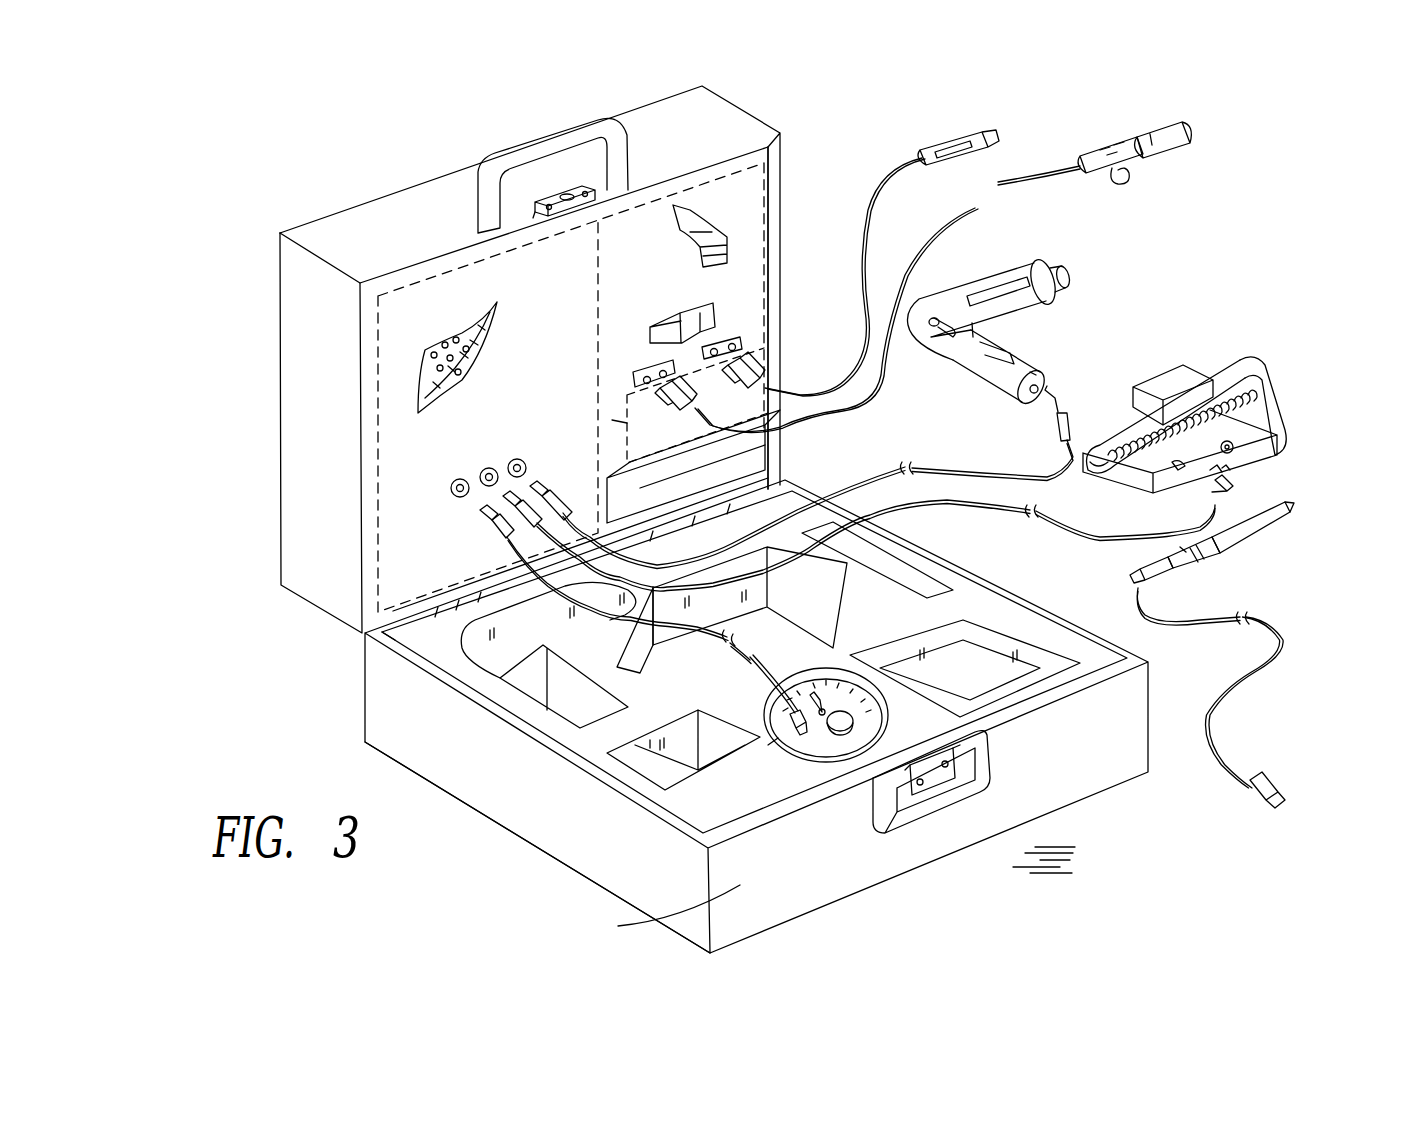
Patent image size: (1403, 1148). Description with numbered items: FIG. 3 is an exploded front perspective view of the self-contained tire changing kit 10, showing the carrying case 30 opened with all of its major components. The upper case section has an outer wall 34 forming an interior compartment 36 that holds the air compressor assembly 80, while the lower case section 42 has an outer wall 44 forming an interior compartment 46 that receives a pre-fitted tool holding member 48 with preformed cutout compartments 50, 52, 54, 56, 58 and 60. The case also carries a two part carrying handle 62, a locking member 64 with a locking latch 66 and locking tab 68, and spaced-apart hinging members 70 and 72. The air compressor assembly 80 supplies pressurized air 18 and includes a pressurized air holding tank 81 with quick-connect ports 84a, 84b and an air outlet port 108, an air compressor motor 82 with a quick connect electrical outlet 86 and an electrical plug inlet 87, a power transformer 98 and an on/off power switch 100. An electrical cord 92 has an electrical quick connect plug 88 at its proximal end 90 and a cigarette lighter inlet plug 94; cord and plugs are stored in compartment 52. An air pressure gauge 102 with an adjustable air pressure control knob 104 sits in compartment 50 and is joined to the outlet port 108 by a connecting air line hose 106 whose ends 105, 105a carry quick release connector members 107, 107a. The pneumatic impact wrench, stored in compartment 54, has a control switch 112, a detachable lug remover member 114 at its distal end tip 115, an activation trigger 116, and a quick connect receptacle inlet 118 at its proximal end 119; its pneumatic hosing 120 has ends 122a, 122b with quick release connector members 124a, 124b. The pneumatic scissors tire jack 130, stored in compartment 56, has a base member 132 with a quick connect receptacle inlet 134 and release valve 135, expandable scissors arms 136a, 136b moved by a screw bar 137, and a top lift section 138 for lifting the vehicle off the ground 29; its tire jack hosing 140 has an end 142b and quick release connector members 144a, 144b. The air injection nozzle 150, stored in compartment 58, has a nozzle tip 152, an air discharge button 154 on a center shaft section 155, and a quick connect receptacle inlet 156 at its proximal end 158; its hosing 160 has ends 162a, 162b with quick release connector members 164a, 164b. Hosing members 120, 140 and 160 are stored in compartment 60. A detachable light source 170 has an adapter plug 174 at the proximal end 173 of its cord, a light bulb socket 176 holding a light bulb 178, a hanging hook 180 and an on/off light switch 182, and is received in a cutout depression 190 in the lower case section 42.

The self-contained tire changing kit 10 is at (688, 519).
The pressurized air 18 is at (442, 349).
The ground 29 is at (1050, 845).
The carrying case 30 is at (792, 156).
The outer wall 34 is at (300, 265).
The interior compartment 36 is at (358, 342).
The lower case section 42 is at (566, 834).
The outer wall 44 is at (690, 905).
The interior compartment 46 is at (396, 657).
The tool holding member 48 is at (592, 738).
The cutout compartment 50 is at (782, 732).
The cutout compartment 52 is at (650, 755).
The cutout compartment 54 is at (490, 657).
The cutout compartment 56 is at (772, 625).
The cutout compartment 58 is at (924, 563).
The cutout compartment 60 is at (990, 620).
The two part carrying handle 62 is at (1005, 771).
The locking member 64 is at (533, 220).
The locking latch 66 is at (554, 191).
The locking tab 68 is at (965, 730).
The hinging member 70 is at (430, 607).
The hinging member 72 is at (734, 466).
The air compressor assembly 80 is at (578, 257).
The pressurized air holding tank 81 is at (435, 366).
The air compressor motor 82 is at (693, 226).
The quick-connect opening 84a is at (523, 460).
The quick-connect opening 84b is at (486, 468).
The quick connect electrical outlet 86 is at (733, 338).
The electrical plug inlet 87 is at (655, 366).
The electrical quick connect plug 88 is at (745, 380).
The proximal end 90 is at (770, 362).
The electrical cord 92 is at (897, 183).
The cigarette lighter inlet plug 94 is at (922, 156).
The power transformer 98 is at (612, 420).
The on/off power switch 100 is at (700, 313).
The air pressure gauge 102 is at (820, 742).
The adjustable air pressure control knob 104 is at (854, 722).
The end of connecting air line hose 105 is at (807, 724).
The end of connecting air line hose 105a is at (790, 695).
The connecting air line hose 106 is at (725, 638).
The quick release connector member 107 is at (508, 505).
The quick release connector member 107a is at (768, 745).
The air outlet opening 108 is at (452, 480).
The control switch 112 is at (909, 317).
The detachable lug remover member 114 is at (1066, 265).
The distal end tip 115 is at (1033, 260).
The activation trigger 116 is at (1030, 358).
The quick connect receptacle inlet 118 is at (1040, 383).
The proximal end 119 is at (1061, 351).
The impact wrench pneumatic hosing 120 is at (841, 468).
The end of impact wrench hosing 122a is at (1060, 438).
The end of impact wrench hosing 122b is at (664, 562).
The quick release connector member 124a is at (1056, 400).
The quick release connector member 124b is at (560, 496).
The pneumatic scissors-type tire jack 130 is at (1186, 418).
The base member 132 is at (1258, 433).
The quick connect receptacle inlet 134 is at (1234, 444).
The release valve 135 is at (1218, 487).
The expandable scissors arm 136a is at (1235, 364).
The expandable scissors arm 136b is at (1128, 402).
The screw bar 137 is at (1108, 470).
The top lift section 138 is at (1182, 378).
The tire jack hosing 140 is at (995, 630).
The end of tire jack hosing 142b is at (488, 520).
The quick release connector member 144a is at (1232, 471).
The quick release connector member 144b is at (482, 510).
The air injection nozzle 150 is at (1209, 561).
The air injection nozzle tip 152 is at (1263, 537).
The air discharge button 154 is at (1242, 548).
The center shaft section 155 is at (1180, 547).
The quick connect receptacle inlet 156 is at (1218, 560).
The proximal end 158 is at (1196, 560).
The air injection nozzle hosing 160 is at (1200, 697).
The end of nozzle hosing 162a is at (1136, 590).
The end of nozzle hosing 162b is at (1230, 753).
The quick release connector member 164a is at (1140, 576).
The quick release connector member 164b is at (1260, 772).
The detachable light source 170 is at (1076, 134).
The proximal end 173 is at (660, 405).
The adapter plug 174 is at (660, 392).
The light bulb socket 176 is at (1092, 150).
The light bulb 178 is at (1158, 120).
The hanging hook 180 is at (1130, 178).
The on/off light switch 182 is at (1108, 146).
The preformed cutout compartment 190 is at (758, 453).